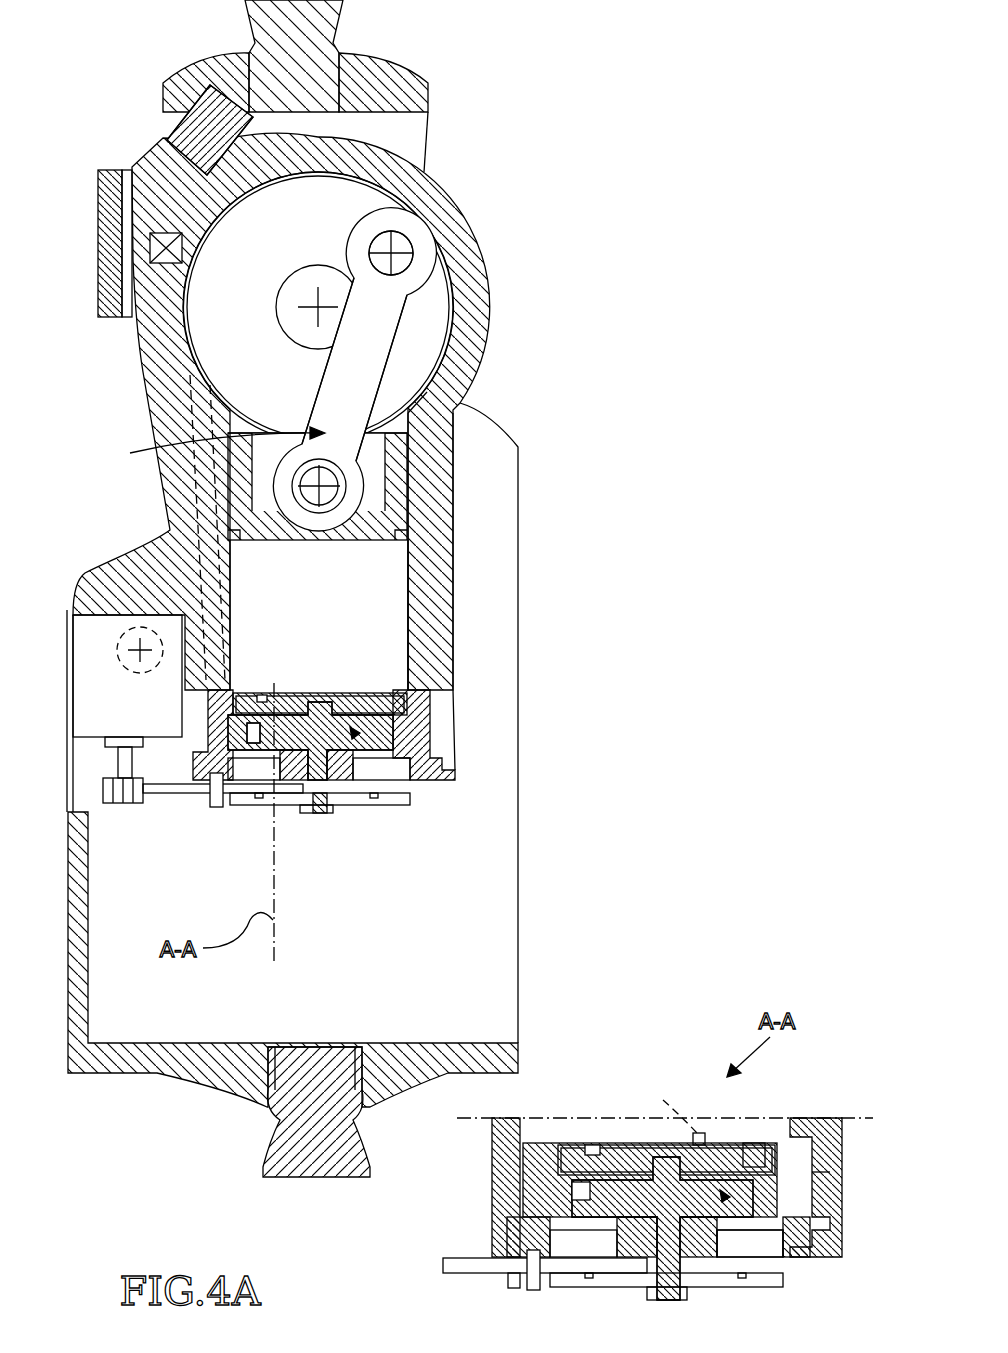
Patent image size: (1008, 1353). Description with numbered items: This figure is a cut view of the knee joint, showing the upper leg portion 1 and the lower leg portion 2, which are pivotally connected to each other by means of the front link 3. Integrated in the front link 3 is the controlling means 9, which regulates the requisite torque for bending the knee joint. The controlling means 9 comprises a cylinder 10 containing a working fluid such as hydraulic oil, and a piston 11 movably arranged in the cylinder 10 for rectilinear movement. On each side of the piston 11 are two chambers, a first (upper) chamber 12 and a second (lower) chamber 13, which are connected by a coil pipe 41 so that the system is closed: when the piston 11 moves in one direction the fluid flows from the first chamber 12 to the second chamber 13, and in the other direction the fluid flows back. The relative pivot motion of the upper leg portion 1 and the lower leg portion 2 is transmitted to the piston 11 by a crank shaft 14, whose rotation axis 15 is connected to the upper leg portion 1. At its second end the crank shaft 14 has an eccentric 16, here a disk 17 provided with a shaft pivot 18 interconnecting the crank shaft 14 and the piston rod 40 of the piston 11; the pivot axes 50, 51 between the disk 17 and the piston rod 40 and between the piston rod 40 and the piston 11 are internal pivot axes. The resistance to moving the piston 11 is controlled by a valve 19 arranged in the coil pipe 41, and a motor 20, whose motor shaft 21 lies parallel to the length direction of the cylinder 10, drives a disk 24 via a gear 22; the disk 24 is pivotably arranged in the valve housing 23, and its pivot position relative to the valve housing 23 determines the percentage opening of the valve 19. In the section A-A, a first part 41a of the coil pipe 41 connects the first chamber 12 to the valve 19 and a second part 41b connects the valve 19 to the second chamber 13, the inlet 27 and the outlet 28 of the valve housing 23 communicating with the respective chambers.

The upper leg portion 1 is at (385, 73).
The lower leg portion 2 is at (190, 1058).
The front link 3 is at (150, 350).
The controlling means 9 is at (216, 449).
The cylinder 10 is at (325, 655).
The piston 11 is at (400, 470).
The first chamber 12 is at (440, 410).
The second chamber 13 is at (385, 595).
The crank shaft 14 is at (290, 330).
The rotation axis 15 is at (308, 300).
The eccentric 16 is at (418, 208).
The disk 17 is at (415, 325).
The shaft pivot 18 is at (400, 250).
The valve 19 is at (377, 753).
The motor 20 is at (100, 703).
The motor shaft 21 is at (125, 763).
The gear 22 is at (302, 838).
The valve housing 23 is at (420, 723).
The disk 24 is at (327, 736).
The inlet 27 is at (213, 777).
The outlet 28 is at (260, 757).
The piston rod 40 is at (365, 372).
The coil pipe 41 is at (160, 490).
The first part of the coil pipe 41a is at (672, 1109).
The second part of the coil pipe 41b is at (820, 1172).
The pivot axis 50 is at (395, 258).
The pivot axis 51 is at (333, 493).